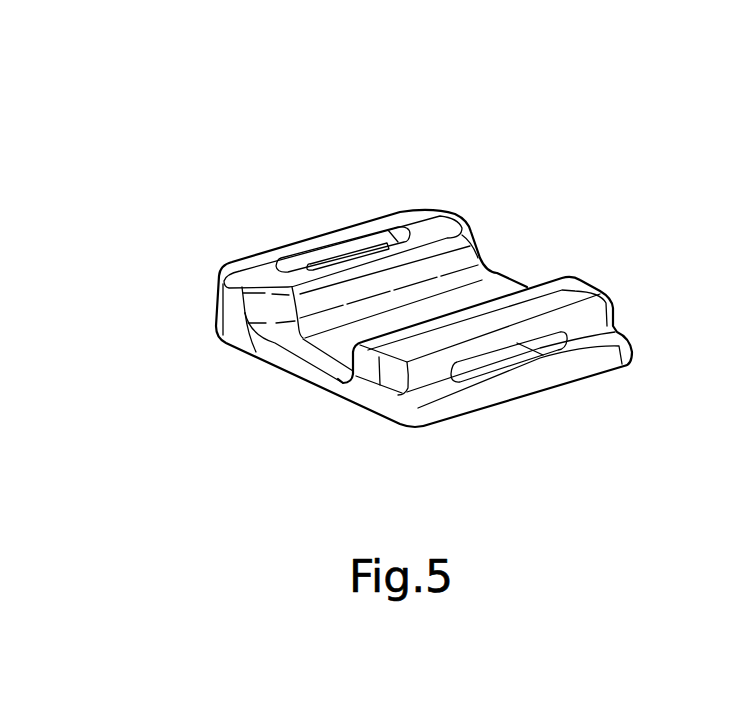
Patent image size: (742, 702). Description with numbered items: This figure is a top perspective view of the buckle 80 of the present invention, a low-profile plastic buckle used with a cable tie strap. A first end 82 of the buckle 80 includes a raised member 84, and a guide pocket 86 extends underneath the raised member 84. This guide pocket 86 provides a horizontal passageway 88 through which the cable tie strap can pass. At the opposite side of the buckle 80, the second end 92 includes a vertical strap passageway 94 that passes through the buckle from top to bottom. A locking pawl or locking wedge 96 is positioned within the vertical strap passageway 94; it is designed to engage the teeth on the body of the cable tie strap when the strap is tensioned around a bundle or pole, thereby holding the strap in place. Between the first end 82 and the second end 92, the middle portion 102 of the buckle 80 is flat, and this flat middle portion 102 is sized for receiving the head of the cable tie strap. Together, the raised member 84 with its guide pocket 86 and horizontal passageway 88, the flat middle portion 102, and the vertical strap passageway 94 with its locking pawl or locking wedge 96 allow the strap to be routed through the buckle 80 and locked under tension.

The buckle 80 is at (409, 122).
The first end 82 is at (597, 322).
The raised member 84 is at (570, 290).
The guide pocket 86 is at (566, 347).
The horizontal passageway 88 is at (462, 369).
The second end 92 is at (218, 293).
The vertical strap passageway 94 is at (306, 262).
The locking pawl or locking wedge 96 is at (357, 260).
The middle portion 102 is at (336, 343).